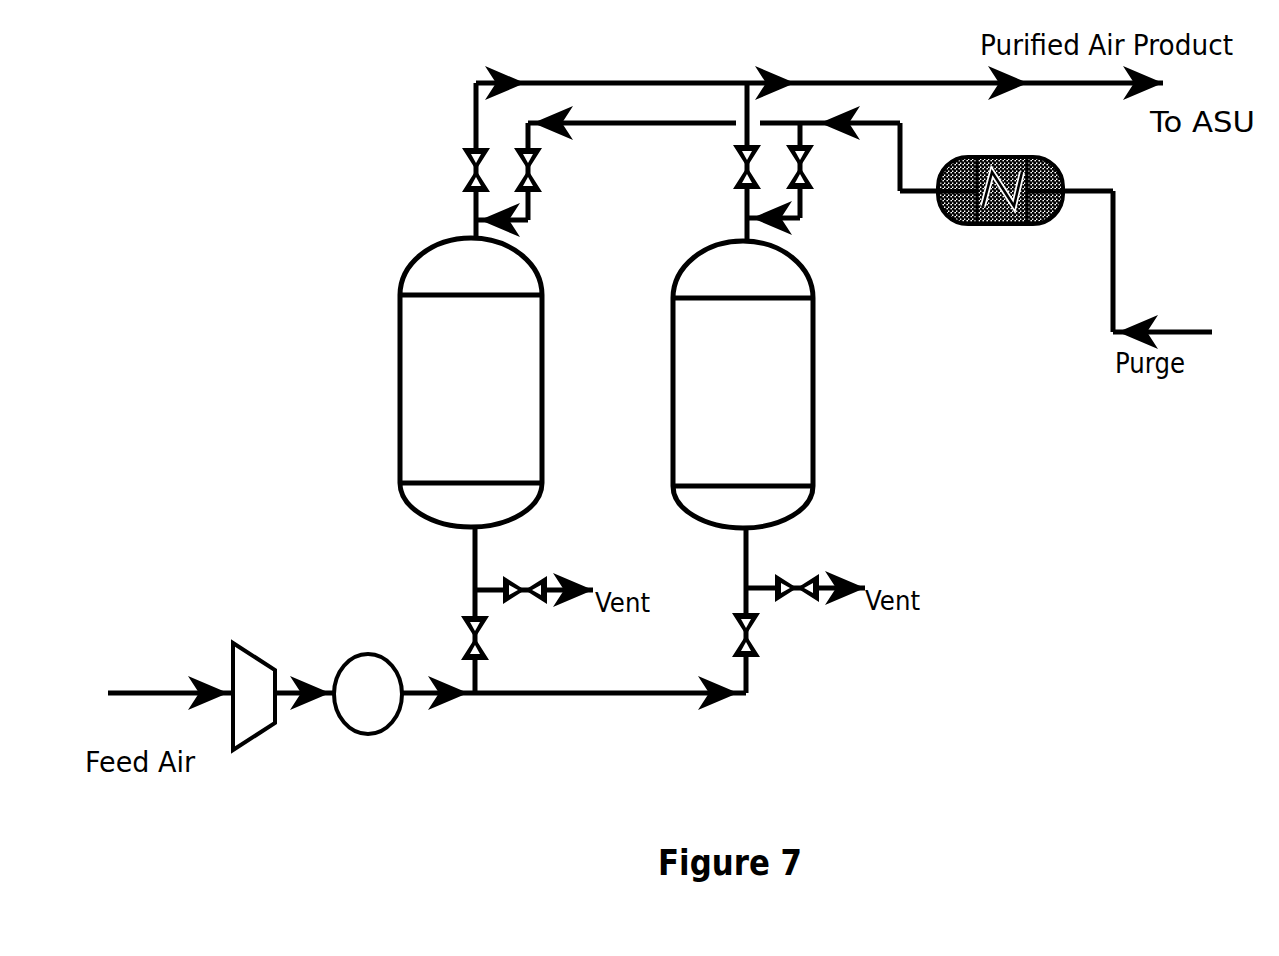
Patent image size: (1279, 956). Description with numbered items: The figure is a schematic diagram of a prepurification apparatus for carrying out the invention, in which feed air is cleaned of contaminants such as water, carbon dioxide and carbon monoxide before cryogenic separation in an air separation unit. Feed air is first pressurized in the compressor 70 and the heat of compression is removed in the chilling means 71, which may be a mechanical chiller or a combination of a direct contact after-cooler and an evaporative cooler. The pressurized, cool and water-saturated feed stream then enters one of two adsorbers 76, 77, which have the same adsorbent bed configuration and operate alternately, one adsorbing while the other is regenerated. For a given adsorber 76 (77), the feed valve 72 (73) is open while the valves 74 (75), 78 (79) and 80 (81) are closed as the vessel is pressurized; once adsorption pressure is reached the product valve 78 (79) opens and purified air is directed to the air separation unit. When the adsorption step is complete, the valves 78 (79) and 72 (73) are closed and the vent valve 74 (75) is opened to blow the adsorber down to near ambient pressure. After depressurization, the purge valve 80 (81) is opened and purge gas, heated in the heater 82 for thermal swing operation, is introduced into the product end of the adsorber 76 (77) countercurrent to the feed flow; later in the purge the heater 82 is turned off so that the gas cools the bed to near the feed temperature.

The compressor 70 is at (254, 696).
The chilling means 71 is at (368, 694).
The valve 72 is at (456, 638).
The valve 73 is at (729, 635).
The valve 74 is at (526, 572).
The valve 75 is at (800, 571).
The adsorber 76 is at (471, 382).
The adsorber 77 is at (743, 384).
The valve 78 is at (458, 170).
The valve 79 is at (733, 167).
The valve 80 is at (549, 170).
The valve 81 is at (823, 167).
The heater 82 is at (1000, 218).